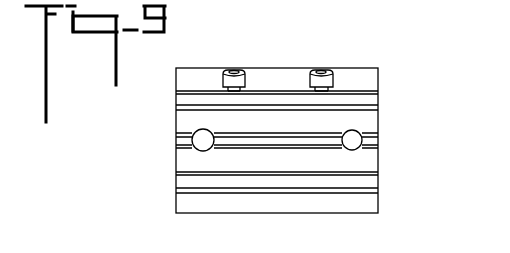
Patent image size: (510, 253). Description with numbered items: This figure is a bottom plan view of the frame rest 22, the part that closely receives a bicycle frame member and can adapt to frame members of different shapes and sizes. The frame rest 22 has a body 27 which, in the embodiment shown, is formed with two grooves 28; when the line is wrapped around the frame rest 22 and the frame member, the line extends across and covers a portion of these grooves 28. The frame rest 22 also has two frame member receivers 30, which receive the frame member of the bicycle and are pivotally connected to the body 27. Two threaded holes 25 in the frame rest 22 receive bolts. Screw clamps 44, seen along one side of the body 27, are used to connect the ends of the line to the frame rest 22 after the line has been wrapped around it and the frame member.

The frame rest 22 is at (397, 72).
The threaded holes 25 is at (203, 140).
The body 27 is at (197, 121).
The grooves 28 is at (368, 120).
The frame member receivers 30 is at (348, 78).
The screw clamps 44 is at (316, 80).